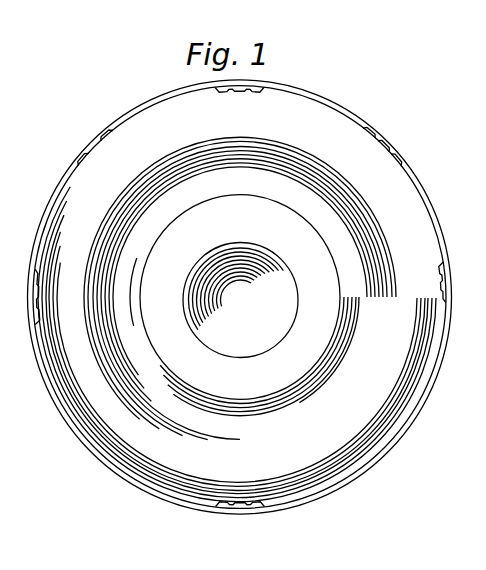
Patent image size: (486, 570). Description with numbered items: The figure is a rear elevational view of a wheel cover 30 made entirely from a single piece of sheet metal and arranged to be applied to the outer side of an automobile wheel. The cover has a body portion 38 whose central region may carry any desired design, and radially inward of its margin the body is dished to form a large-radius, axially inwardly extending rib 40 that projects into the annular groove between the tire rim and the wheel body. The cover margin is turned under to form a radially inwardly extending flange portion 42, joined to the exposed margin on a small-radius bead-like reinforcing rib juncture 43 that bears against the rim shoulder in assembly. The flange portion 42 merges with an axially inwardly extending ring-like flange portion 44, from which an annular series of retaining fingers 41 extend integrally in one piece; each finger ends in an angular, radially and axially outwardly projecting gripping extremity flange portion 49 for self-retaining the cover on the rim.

The wheel cover 30 is at (158, 503).
The body portion 38 is at (258, 385).
The rib 40 is at (283, 482).
The retaining fingers 41 is at (279, 506).
The underturned flange portion 42 is at (446, 347).
The reinforcing rib juncture 43 is at (428, 409).
The ring-like flange portion 44 is at (430, 372).
The gripping extremity flange portion 49 is at (383, 448).